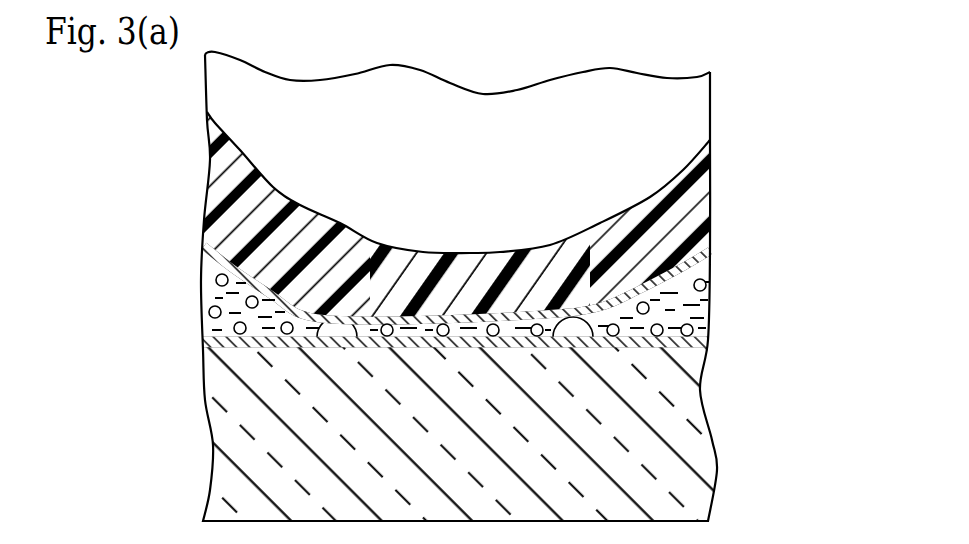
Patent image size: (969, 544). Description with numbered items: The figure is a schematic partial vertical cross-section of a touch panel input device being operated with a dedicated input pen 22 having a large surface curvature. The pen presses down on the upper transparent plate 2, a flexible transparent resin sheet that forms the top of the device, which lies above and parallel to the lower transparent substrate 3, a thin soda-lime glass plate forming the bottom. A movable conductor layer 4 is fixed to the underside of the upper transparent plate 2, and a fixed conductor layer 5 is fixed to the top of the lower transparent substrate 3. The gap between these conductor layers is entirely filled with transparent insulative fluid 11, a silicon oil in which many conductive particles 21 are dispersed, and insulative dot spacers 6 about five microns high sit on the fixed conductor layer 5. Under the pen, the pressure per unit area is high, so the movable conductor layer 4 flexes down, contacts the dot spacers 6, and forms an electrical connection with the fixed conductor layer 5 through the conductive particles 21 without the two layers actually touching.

The upper transparent plate 2 is at (683, 204).
The lower transparent substrate 3 is at (667, 423).
The movable conductor layer 4 is at (205, 248).
The fixed conductor layer 5 is at (708, 342).
The dot spacers 6 is at (337, 326).
The transparent insulative fluid 11 is at (212, 285).
The conductive particles 21 is at (212, 310).
The dedicated input pen 22 is at (643, 122).